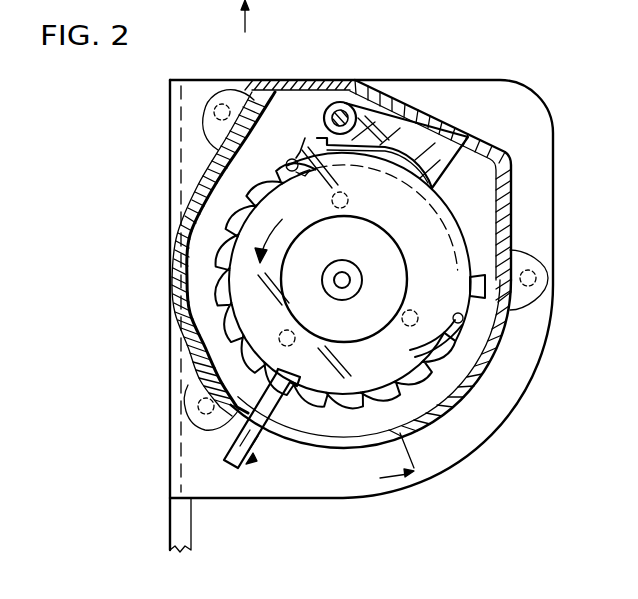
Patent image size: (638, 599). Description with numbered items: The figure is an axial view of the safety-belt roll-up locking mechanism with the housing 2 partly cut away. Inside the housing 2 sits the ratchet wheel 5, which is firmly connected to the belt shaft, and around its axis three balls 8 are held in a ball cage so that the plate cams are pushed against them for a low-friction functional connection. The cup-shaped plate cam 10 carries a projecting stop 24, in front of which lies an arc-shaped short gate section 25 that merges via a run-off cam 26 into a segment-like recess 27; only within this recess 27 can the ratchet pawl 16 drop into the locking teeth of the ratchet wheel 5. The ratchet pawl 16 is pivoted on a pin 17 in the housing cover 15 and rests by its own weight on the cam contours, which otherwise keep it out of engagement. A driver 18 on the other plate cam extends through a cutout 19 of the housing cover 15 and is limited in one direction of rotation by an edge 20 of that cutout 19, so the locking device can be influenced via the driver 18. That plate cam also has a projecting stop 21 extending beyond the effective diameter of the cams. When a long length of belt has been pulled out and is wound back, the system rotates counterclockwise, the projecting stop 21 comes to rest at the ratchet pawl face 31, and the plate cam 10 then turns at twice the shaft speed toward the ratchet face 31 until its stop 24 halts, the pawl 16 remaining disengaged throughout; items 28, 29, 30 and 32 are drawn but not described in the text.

The housing 2 is at (508, 93).
The ratchet wheel 5 is at (215, 283).
The balls 8 is at (352, 204).
The plate cam 10 is at (430, 350).
The housing cover 15 is at (210, 187).
The ratchet pawl 16 is at (390, 108).
The pin 17 is at (334, 101).
The driver 18 is at (238, 470).
The cutout 19 is at (327, 443).
The edge 20 is at (210, 410).
The projecting stop 21 is at (487, 297).
The projecting stop 24 is at (317, 138).
The gate section 25 is at (290, 160).
The run-off cam 26 is at (287, 150).
The segment-like recess 27 is at (455, 328).
The pull direction 28 is at (246, 20).
The rotation direction 29 is at (290, 238).
The clearance 30 is at (383, 479).
The ratchet pawl face 31 is at (455, 160).
The locking pawl 32 is at (428, 340).